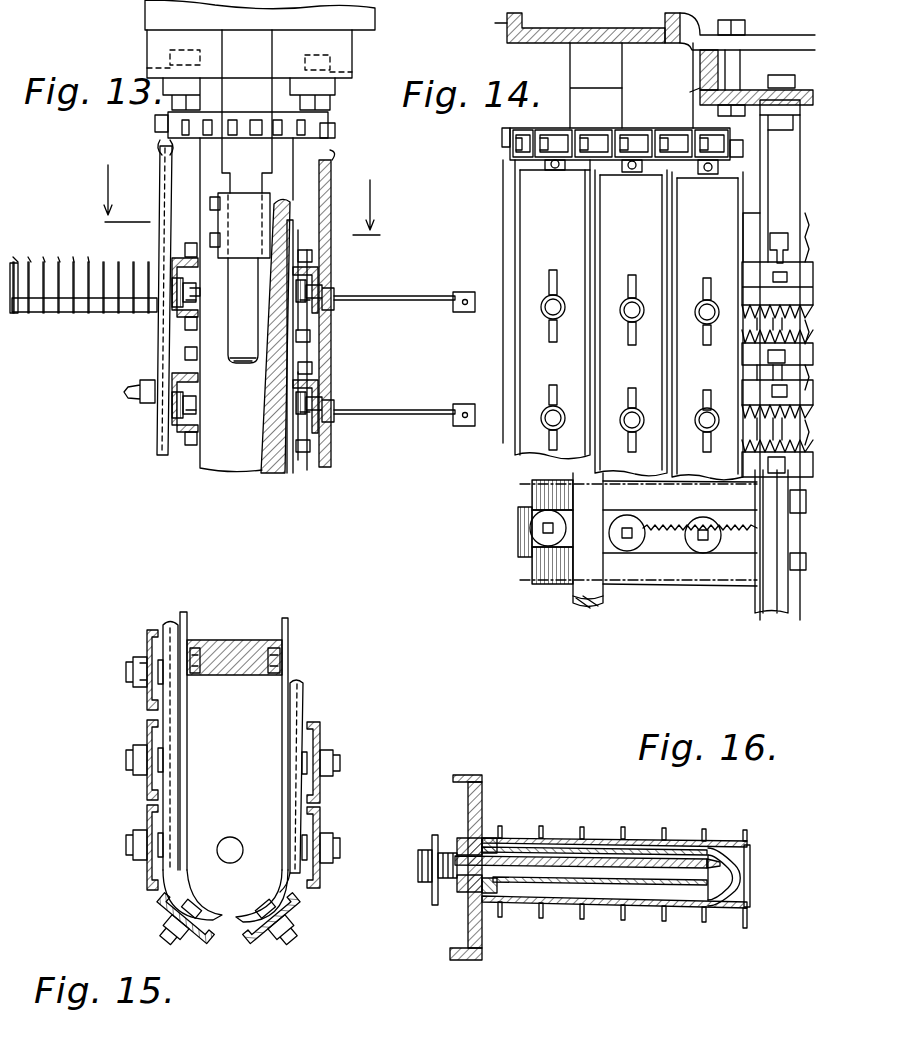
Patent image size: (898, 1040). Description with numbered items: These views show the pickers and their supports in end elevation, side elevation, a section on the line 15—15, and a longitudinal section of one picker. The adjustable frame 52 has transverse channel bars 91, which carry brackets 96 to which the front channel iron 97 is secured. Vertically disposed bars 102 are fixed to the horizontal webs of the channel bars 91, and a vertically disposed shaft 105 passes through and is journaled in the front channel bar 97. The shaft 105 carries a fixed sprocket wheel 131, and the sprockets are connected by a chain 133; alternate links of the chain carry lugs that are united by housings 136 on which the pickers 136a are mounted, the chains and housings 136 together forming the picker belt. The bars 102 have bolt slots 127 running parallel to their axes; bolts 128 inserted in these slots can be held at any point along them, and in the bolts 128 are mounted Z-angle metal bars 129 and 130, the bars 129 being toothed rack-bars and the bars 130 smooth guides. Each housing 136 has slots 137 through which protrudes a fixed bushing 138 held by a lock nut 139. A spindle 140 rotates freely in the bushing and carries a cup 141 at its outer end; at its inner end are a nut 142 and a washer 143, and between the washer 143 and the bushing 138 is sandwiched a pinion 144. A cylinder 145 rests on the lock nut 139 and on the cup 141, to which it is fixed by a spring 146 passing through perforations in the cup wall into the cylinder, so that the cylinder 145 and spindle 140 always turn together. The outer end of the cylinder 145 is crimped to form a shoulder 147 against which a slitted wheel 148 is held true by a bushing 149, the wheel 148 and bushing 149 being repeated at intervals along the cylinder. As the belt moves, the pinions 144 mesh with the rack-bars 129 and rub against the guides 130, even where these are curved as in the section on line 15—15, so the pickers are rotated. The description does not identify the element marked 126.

In FIG. 13, the adjustable frame 52 is at (389, 24).
In FIG. 13, the front channel iron 97 is at (160, 12).
In FIG. 14, the front channel iron 97 is at (658, 43).
In FIG. 13, the transverse channel bar 91 is at (158, 42).
In FIG. 14, the transverse channel bar 91 is at (657, 85).
In FIG. 14, the bracket 96 is at (772, 76).
In FIG. 13, the vertically disposed shaft 105 is at (242, 362).
In FIG. 14, the vertically disposed shaft 105 is at (558, 606).
In FIG. 13, the vertically disposed bar 102 is at (245, 305).
In FIG. 14, the vertically disposed bar 102 is at (740, 612).
In FIG. 15, the vertically disposed bar 102 is at (235, 634).
In FIG. 13, the bolt slot 127 is at (278, 474).
In FIG. 14, the bolt slot 127 is at (783, 224).
In FIG. 13, the chain 133 is at (330, 124).
In FIG. 14, the chain 133 is at (548, 128).
In FIG. 13, the upper sprocket wheel 131 is at (158, 124).
In FIG. 14, the upper sprocket wheel 131 is at (502, 140).
In FIG. 13, the housing 136 is at (160, 193).
In FIG. 14, the housing 136 is at (623, 320).
In FIG. 15, the housing 136 is at (140, 688).
In FIG. 16, the housing 136 is at (476, 962).
In FIG. 13, the picker 136a is at (40, 304).
In FIG. 16, the picker 136a is at (614, 906).
In FIG. 13, the rack-bar 129 is at (178, 264).
In FIG. 14, the rack-bar 129 is at (745, 338).
In FIG. 15, the rack-bar 129 is at (162, 713).
In FIG. 13, the pinion 144 is at (172, 326).
In FIG. 16, the pinion 144 is at (438, 900).
In FIG. 13, the guide 130 is at (336, 290).
In FIG. 14, the guide 130 is at (752, 394).
In FIG. 15, the guide 130 is at (298, 700).
In FIG. 13, the spindle 140 is at (124, 393).
In FIG. 14, the spindle 140 is at (626, 322).
In FIG. 15, the spindle 140 is at (128, 668).
In FIG. 16, the spindle 140 is at (430, 882).
In FIG. 13, the slitted wheel 148 is at (74, 258).
In FIG. 16, the slitted wheel 148 is at (626, 833).
In FIG. 13, the bolt 128 is at (300, 458).
In FIG. 14, the bolt 128 is at (777, 369).
In FIG. 15, the bolt 128 is at (184, 641).
In FIG. 13, the section line 15 is at (241, 200).
In FIG. 14, the slot 137 is at (553, 268).
In FIG. 14, the nut 142 is at (634, 274).
In FIG. 16, the nut 142 is at (425, 846).
In FIG. 14, the washer 143 is at (715, 514).
In FIG. 16, the washer 143 is at (440, 918).
In FIG. 14, the bushing 149 is at (632, 446).
In FIG. 16, the bushing 149 is at (562, 835).
In FIG. 14, the gear 126 is at (748, 358).
In FIG. 16, the fixed bushing 138 is at (466, 838).
In FIG. 16, the lock nut 139 is at (512, 838).
In FIG. 16, the cylinder 145 is at (562, 895).
In FIG. 16, the cup 141 is at (704, 823).
In FIG. 16, the spring 146 is at (740, 874).
In FIG. 16, the shoulder 147 is at (724, 966).